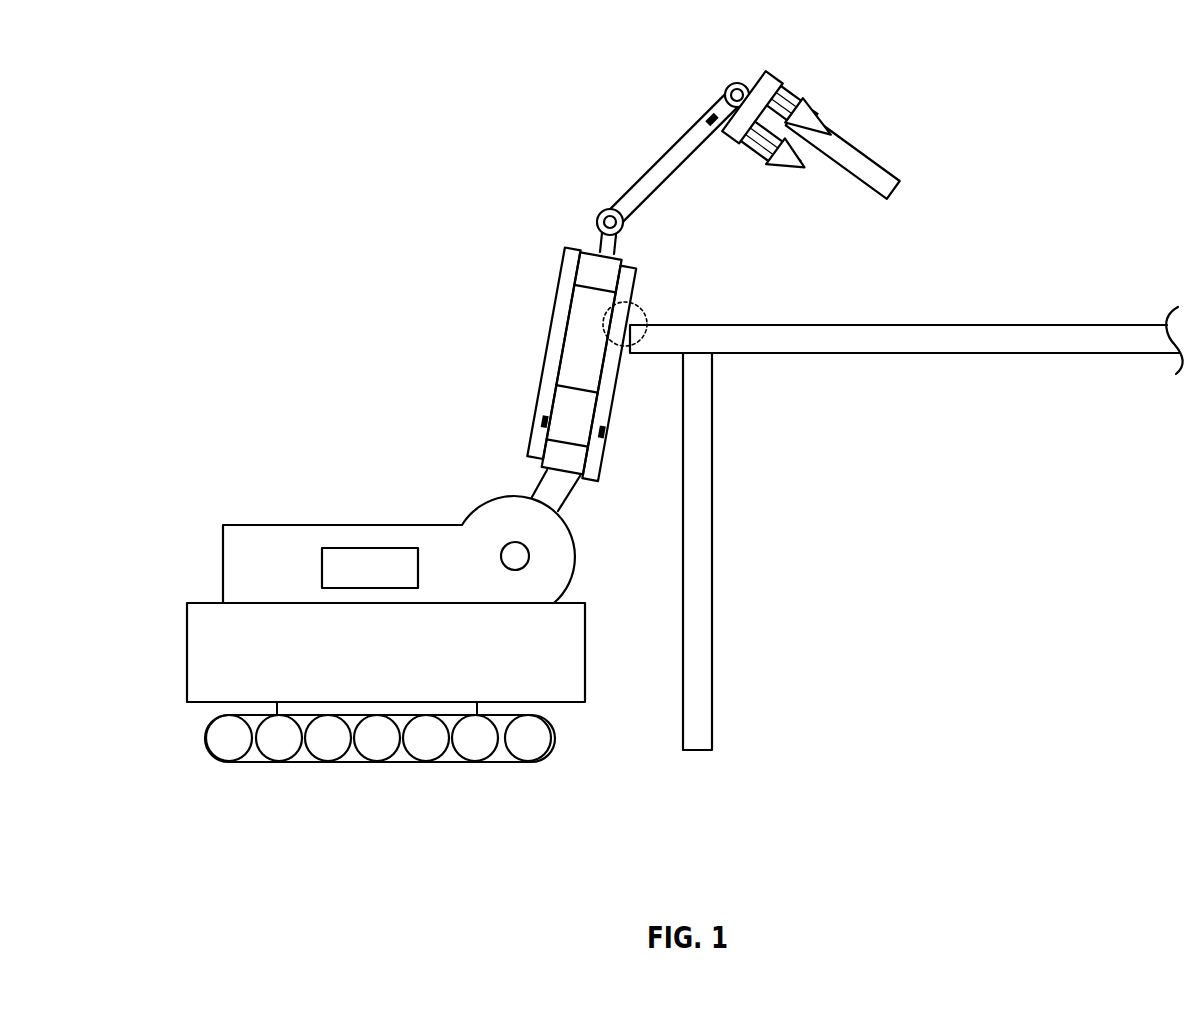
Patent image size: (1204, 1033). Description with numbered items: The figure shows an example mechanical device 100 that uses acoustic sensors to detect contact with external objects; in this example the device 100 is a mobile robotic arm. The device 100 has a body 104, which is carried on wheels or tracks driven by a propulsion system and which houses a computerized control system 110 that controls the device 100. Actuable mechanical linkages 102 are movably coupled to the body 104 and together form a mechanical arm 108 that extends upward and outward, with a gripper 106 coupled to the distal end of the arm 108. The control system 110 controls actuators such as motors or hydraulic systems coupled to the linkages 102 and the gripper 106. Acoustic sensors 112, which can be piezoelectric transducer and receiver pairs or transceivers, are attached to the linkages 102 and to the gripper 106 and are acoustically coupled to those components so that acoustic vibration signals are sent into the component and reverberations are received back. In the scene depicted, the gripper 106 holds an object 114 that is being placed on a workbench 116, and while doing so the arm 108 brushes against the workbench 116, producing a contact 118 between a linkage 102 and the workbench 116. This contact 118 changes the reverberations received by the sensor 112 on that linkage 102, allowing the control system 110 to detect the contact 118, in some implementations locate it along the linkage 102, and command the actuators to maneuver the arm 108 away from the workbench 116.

The mechanical device 100 is at (208, 223).
The mechanical linkages 102 is at (557, 308).
The body 104 is at (388, 667).
The gripper 106 is at (828, 67).
The mechanical arm 108 is at (540, 206).
The computerized control system 110 is at (384, 581).
The acoustic sensors 112 is at (542, 421).
The object 114 is at (903, 186).
The workbench 116 is at (850, 356).
The contact 118 is at (645, 318).